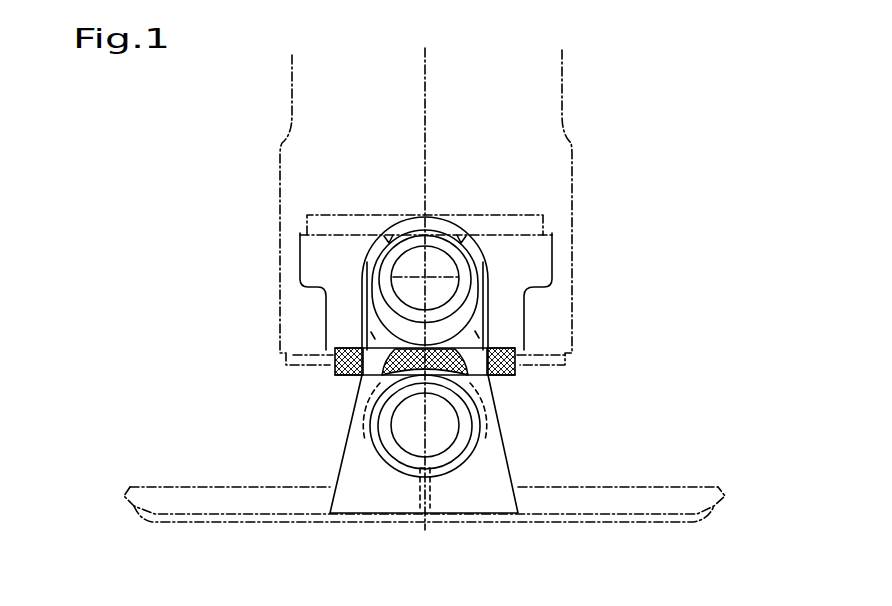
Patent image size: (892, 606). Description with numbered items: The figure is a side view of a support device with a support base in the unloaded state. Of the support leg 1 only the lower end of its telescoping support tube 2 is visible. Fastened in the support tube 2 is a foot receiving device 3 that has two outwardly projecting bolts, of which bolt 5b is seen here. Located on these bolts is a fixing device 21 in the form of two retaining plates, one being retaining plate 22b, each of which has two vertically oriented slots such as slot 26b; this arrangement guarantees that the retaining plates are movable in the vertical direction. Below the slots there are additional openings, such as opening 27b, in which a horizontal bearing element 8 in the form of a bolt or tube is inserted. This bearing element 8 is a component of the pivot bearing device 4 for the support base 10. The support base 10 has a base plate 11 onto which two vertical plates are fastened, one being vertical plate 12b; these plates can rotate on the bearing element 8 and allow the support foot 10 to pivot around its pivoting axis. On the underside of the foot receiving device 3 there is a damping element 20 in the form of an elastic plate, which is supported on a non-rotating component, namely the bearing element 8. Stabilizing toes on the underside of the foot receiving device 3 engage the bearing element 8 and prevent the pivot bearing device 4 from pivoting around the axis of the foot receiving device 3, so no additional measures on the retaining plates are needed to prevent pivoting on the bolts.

The support leg 1 is at (644, 144).
The telescoping support tube 2 is at (572, 276).
The foot receiving device 3 is at (527, 250).
The pivot bearing device 4 is at (511, 407).
The bolt 5b is at (418, 270).
The bearing element 8 is at (403, 417).
The support base 10 is at (686, 447).
The base plate 11 is at (661, 518).
The vertical plate 12b is at (483, 467).
The damping element 20 is at (545, 363).
The fixing device 21 is at (356, 313).
The retaining plate 22b is at (378, 338).
The slot 26b is at (437, 333).
The opening 27b is at (383, 443).